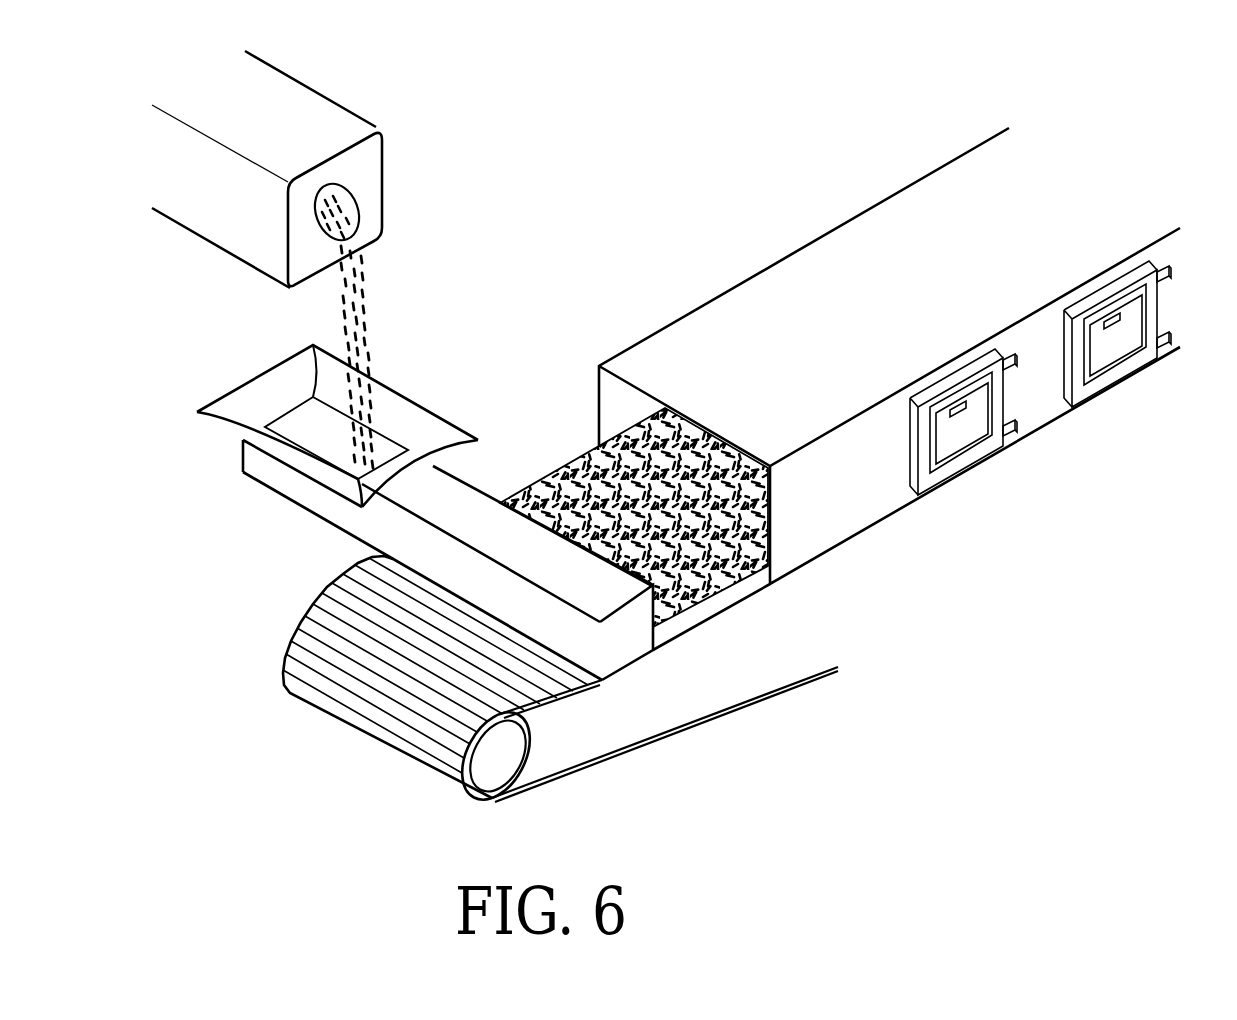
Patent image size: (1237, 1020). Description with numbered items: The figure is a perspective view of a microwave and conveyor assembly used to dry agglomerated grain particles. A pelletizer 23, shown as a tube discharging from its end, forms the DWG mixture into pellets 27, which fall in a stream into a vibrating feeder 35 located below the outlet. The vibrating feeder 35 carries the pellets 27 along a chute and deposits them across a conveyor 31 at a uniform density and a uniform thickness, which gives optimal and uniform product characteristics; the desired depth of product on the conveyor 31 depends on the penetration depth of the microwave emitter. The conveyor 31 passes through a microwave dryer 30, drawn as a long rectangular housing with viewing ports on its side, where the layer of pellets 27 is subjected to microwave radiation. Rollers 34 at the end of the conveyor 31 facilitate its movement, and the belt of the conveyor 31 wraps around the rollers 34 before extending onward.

The pelletizer 23 is at (357, 98).
The pellets 27 is at (375, 333).
The microwave dryer 30 is at (832, 562).
The conveyor 31 is at (706, 728).
The rollers 34 is at (530, 765).
The vibrating feeder 35 is at (330, 530).